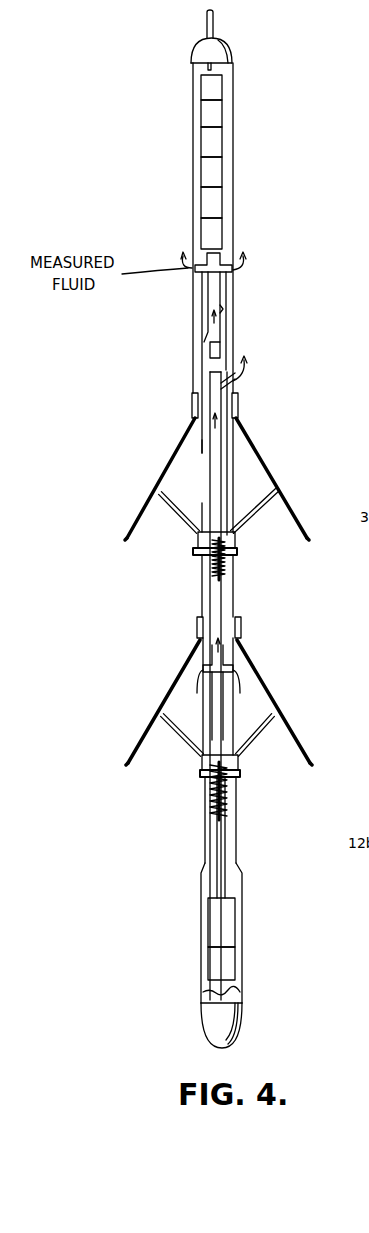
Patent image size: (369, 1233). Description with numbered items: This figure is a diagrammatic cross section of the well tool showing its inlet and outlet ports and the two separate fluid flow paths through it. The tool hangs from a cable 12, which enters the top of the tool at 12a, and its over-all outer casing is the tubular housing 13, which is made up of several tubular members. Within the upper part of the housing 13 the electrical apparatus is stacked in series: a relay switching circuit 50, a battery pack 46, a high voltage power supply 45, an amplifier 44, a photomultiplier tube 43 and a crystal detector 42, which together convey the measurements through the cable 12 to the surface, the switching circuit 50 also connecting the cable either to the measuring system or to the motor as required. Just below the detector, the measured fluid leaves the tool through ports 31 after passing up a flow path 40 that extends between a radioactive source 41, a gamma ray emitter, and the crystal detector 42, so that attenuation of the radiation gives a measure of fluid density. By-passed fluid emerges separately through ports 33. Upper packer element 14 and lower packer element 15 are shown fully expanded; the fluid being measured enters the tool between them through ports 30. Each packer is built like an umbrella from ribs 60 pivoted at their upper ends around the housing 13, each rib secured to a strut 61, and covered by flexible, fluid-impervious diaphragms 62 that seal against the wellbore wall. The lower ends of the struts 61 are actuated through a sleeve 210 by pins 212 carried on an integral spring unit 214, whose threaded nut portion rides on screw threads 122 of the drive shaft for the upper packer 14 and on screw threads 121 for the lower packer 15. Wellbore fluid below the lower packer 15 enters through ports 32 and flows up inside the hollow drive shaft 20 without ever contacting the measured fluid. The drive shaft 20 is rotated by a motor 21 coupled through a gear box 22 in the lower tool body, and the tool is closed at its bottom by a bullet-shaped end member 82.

The cable 12 is at (207, 20).
The cable head connector 12a is at (205, 70).
The tubular housing 13 is at (193, 300).
The relay switching circuit 50 is at (203, 93).
The battery pack 46 is at (203, 119).
The high voltage power supply 45 is at (203, 143).
The amplifier 44 is at (203, 172).
The photomultiplier tube 43 is at (203, 200).
The crystal detector 42 is at (203, 237).
The ports 31 is at (234, 270).
The flow path 40 is at (221, 309).
The radioactive source 41 is at (210, 350).
The ports 33 is at (238, 382).
The upper packer element 14 is at (106, 495).
The ports 30 is at (203, 455).
The diaphragms 62 is at (262, 460).
The strut 61 is at (187, 522).
The ribs 60 is at (132, 536).
The sleeve 210 is at (238, 540).
The pins 212 is at (233, 558).
The integral spring unit 214 is at (225, 568).
The screw threads 122 is at (213, 578).
The lower packer element 15 is at (160, 702).
The ports 32 is at (234, 668).
The screw threads 121 is at (215, 802).
The hollow drive shaft 20 is at (218, 845).
The gear box 22 is at (213, 922).
The motor 21 is at (213, 964).
The bullet-shaped end member 82 is at (210, 1017).